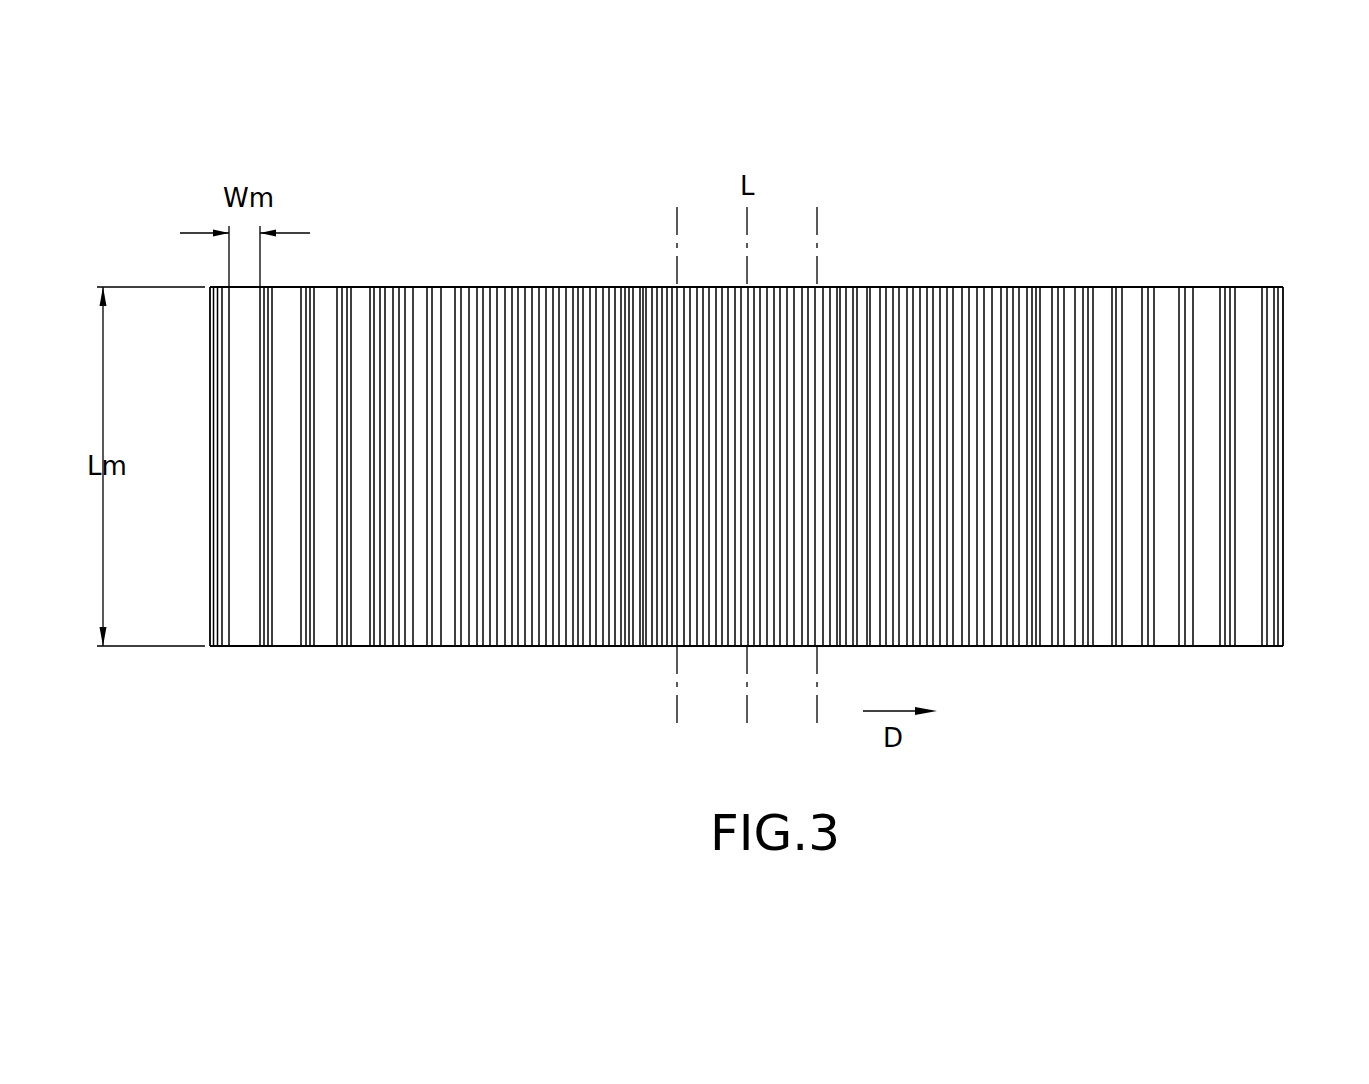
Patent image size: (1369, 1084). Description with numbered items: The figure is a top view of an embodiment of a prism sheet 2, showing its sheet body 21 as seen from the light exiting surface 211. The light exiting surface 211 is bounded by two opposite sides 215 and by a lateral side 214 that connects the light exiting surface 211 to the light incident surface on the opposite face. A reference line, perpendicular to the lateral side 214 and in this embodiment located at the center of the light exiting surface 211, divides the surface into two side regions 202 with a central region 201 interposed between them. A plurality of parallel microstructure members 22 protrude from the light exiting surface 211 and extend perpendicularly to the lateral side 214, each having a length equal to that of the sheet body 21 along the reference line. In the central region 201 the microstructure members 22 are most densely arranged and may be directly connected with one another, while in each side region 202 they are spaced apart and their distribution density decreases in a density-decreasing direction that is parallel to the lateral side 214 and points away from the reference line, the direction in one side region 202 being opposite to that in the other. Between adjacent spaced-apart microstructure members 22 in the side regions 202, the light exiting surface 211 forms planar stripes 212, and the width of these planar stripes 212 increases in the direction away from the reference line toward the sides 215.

The prism sheet 2 is at (752, 430).
The sheet body 21 is at (1133, 648).
The microstructure members 22 is at (378, 290).
The central region 201 is at (710, 228).
The side regions 202 is at (505, 260).
The light exiting surface 211 is at (1248, 632).
The planar stripes 212 is at (1250, 300).
The lateral side 214 is at (284, 647).
The sides 215 is at (210, 400).